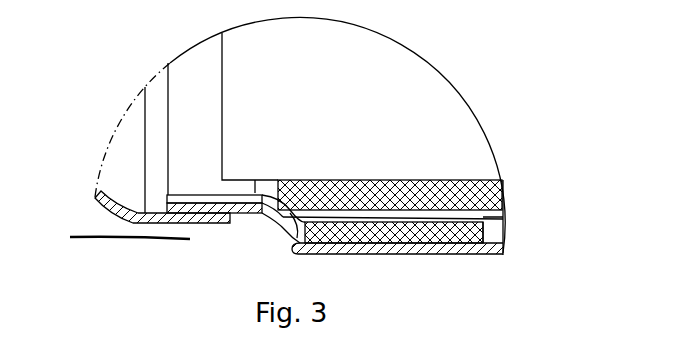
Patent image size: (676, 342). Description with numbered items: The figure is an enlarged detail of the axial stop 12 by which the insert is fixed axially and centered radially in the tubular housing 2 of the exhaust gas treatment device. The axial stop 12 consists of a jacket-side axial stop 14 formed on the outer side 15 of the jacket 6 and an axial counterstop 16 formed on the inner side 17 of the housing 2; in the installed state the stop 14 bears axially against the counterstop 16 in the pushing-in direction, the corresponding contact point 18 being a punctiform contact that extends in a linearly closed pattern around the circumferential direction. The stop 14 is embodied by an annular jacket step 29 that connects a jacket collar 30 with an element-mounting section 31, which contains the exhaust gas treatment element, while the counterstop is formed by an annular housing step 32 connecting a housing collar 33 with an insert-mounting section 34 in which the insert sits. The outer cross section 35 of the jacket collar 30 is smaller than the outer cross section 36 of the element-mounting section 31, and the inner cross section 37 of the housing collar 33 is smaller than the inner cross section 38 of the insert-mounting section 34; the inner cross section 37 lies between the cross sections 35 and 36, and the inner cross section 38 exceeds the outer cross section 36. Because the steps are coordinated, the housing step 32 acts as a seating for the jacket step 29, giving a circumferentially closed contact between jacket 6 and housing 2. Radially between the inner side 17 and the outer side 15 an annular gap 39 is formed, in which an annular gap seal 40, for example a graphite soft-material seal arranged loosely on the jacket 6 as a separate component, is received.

The housing 2 is at (442, 263).
The jacket 6 is at (417, 203).
The axial stop 12 is at (198, 276).
The axial stop 14 is at (262, 215).
The outer side 15 is at (494, 233).
The axial counterstop 16 is at (285, 205).
The inner side 17 is at (241, 203).
The contact point 18 is at (283, 228).
The jacket step 29 is at (280, 192).
The jacket collar 30 is at (218, 198).
The element-mounting section 31 is at (453, 210).
The housing step 32 is at (294, 242).
The housing collar 33 is at (106, 239).
The insert-mounting section 34 is at (372, 252).
The outer cross section 35 is at (204, 189).
The outer cross section 36 is at (361, 204).
The inner cross section 37 is at (177, 194).
The inner cross section 38 is at (382, 231).
The annular gap 39 is at (503, 233).
The gap seal 40 is at (408, 237).